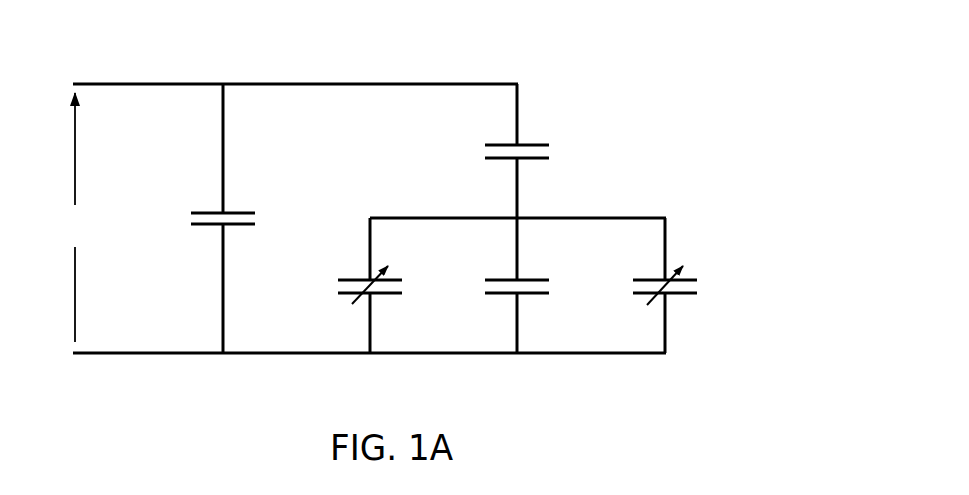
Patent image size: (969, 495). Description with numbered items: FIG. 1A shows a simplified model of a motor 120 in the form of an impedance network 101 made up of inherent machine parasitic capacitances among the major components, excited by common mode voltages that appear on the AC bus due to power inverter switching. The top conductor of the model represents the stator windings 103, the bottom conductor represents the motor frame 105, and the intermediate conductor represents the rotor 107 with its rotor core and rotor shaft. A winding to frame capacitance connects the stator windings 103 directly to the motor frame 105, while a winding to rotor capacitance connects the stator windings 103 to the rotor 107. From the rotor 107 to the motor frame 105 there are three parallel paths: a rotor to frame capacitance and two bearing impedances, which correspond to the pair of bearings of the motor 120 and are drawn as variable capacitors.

The impedance network 101 is at (495, 41).
The stator windings 103 is at (250, 84).
The motor frame 105 is at (295, 353).
The rotor 107 is at (474, 218).
The motor 120 is at (614, 116).